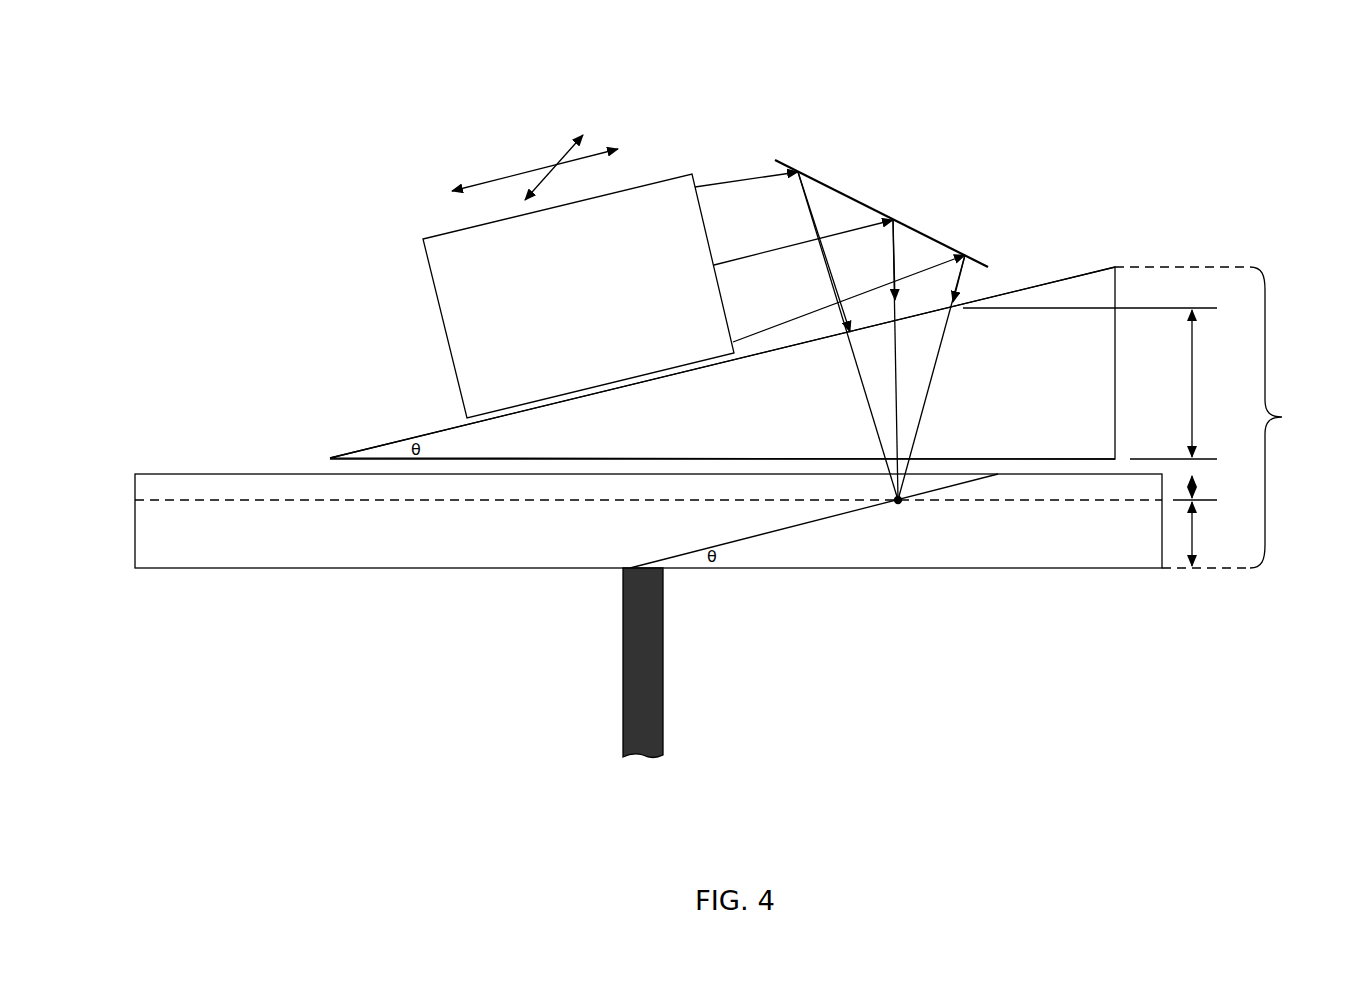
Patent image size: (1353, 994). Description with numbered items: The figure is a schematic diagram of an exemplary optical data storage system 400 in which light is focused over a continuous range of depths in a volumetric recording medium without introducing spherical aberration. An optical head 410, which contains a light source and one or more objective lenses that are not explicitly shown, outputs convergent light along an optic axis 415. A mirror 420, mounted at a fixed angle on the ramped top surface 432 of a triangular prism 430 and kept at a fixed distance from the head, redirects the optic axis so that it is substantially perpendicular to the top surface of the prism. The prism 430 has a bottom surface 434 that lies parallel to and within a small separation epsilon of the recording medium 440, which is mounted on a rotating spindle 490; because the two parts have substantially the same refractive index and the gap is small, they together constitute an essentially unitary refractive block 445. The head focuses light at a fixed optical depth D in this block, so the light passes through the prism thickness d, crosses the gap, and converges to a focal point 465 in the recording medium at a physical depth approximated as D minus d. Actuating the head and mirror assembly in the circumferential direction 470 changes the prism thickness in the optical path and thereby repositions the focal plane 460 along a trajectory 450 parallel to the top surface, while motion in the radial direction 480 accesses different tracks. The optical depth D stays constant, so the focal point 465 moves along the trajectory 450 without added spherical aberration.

The optical data storage system 400 is at (272, 138).
The optical head 410 is at (437, 298).
The optic axis 415 is at (740, 260).
The mirror 420 is at (977, 255).
The prism 430 is at (743, 430).
The ramped top surface 432 is at (1100, 268).
The bottom surface 434 is at (1002, 458).
The recording medium 440 is at (1108, 569).
The refractive block 445 is at (1150, 417).
The trajectory 450 is at (758, 535).
The focal plane 460 is at (987, 502).
The focal point 465 is at (900, 502).
The circumferential direction 470 is at (507, 175).
The radial direction 480 is at (560, 157).
The rotating spindle 490 is at (622, 658).